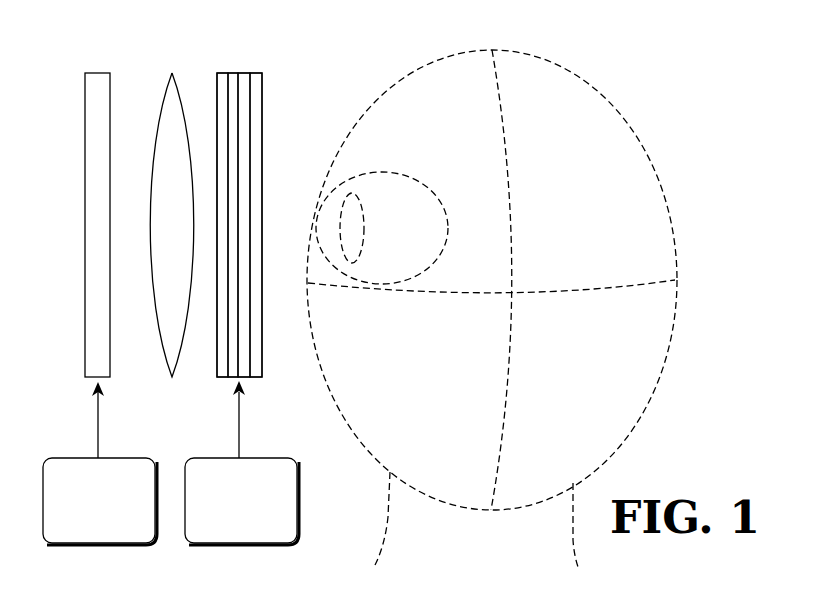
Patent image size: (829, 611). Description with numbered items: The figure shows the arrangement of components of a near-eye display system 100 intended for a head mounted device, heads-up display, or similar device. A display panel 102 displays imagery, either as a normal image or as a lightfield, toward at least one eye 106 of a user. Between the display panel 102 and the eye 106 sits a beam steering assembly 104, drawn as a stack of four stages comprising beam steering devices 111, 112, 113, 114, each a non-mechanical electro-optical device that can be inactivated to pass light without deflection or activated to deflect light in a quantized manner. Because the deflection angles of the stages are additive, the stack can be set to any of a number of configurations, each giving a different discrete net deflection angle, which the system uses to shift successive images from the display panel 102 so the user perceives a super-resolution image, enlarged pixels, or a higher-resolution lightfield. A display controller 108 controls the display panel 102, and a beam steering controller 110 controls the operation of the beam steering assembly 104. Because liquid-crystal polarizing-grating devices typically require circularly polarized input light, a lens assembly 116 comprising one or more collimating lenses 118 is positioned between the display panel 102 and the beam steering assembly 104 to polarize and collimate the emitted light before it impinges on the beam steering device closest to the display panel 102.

The near-eye display system 100 is at (313, 97).
The display panel 102 is at (85, 294).
The beam steering assembly 104 is at (241, 224).
The eye 106 is at (433, 192).
The display controller 108 is at (88, 528).
The beam steering controller 110 is at (229, 536).
The beam steering device 111 is at (217, 379).
The beam steering device 112 is at (232, 379).
The beam steering device 113 is at (248, 379).
The beam steering device 114 is at (257, 379).
The lens assembly 116 is at (172, 63).
The collimating lens 118 is at (183, 230).